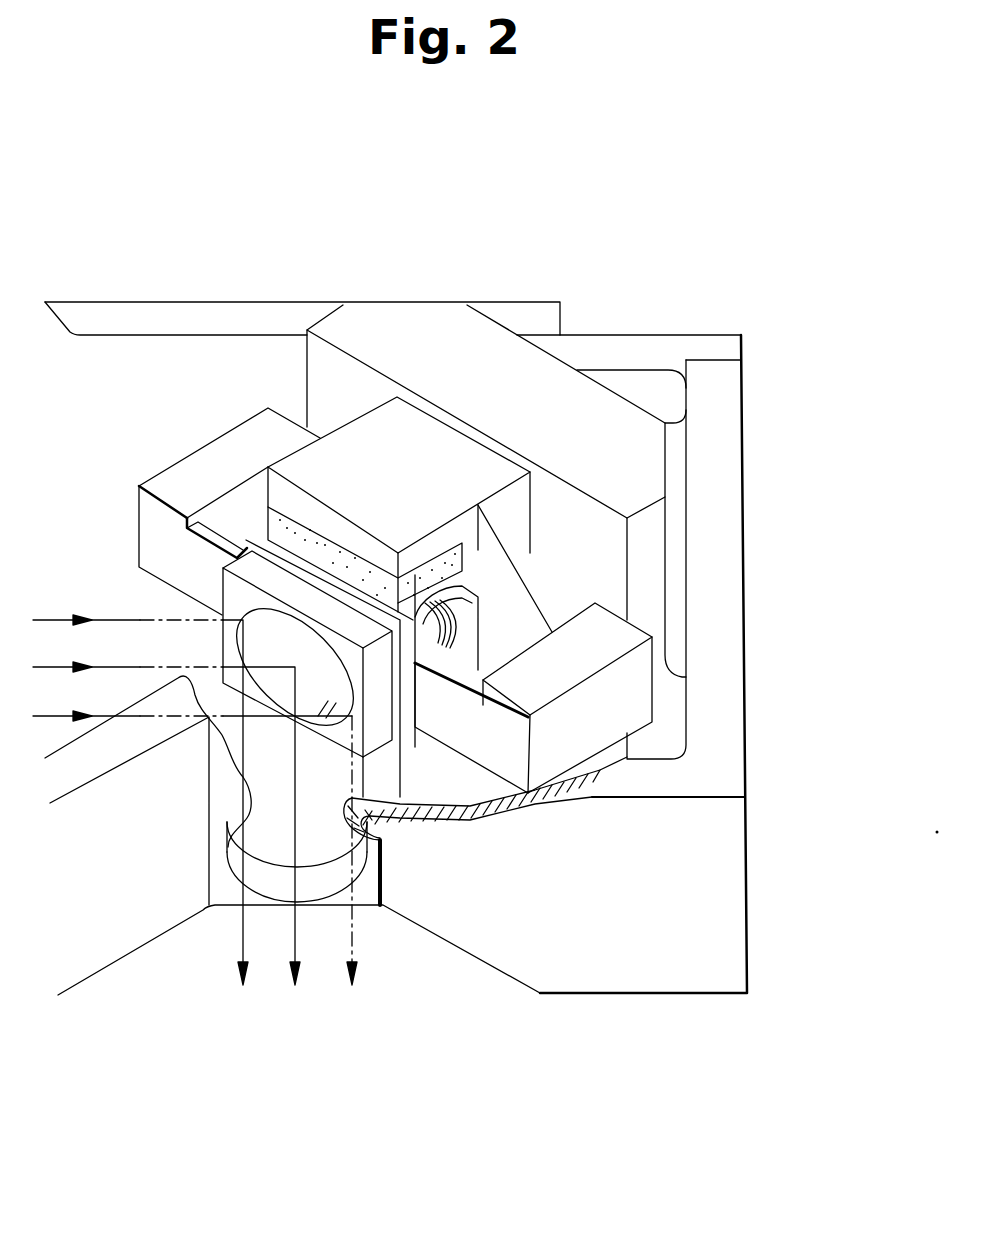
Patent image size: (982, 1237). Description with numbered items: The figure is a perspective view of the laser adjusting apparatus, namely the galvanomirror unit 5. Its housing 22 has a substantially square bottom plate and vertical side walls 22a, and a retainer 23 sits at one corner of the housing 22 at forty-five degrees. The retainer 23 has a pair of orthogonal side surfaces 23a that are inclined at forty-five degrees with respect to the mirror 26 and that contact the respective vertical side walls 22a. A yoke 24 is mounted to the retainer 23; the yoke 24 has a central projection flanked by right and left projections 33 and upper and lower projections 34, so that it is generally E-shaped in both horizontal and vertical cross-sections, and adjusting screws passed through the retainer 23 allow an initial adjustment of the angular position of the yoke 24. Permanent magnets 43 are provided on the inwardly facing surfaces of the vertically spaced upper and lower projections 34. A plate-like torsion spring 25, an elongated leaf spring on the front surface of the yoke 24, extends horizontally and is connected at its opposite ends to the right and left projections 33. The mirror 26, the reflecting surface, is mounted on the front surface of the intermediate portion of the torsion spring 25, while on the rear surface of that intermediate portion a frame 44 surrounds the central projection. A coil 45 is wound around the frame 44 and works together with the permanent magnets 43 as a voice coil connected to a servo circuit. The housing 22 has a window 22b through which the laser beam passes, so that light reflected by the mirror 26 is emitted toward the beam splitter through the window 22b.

The galvanomirror unit 5 is at (782, 280).
The housing 22 is at (744, 505).
The vertical side walls 22a is at (723, 655).
The window 22b is at (263, 887).
The retainer 23 is at (567, 402).
The orthogonal side surfaces 23a is at (380, 300).
The yoke 24 is at (274, 396).
The torsion spring 25 is at (513, 762).
The mirror 26 is at (398, 800).
The right and left projections 33 is at (180, 477).
The upper and lower projections 34 is at (382, 447).
The permanent magnets 43 is at (437, 570).
The frame (bobbin) 44 is at (280, 560).
The coil 45 is at (457, 655).